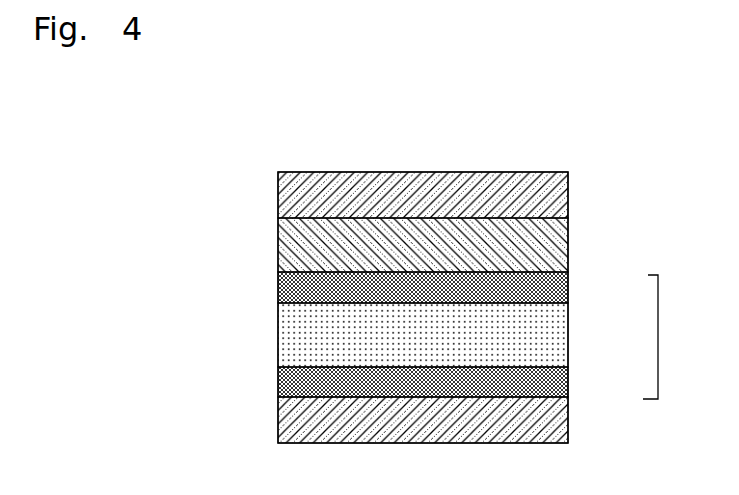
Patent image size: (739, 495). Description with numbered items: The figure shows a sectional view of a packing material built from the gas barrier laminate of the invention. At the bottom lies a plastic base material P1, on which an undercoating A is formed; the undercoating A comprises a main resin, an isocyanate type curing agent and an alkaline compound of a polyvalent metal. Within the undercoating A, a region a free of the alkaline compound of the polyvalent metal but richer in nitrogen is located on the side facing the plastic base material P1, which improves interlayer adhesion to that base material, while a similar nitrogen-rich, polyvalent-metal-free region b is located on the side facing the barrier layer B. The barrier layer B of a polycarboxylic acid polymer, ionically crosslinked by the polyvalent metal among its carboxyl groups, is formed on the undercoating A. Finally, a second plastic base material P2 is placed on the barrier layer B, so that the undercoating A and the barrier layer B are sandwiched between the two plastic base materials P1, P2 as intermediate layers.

The plastic base material P2 is at (568, 199).
The barrier layer B is at (568, 245).
The region b is at (568, 287).
The undercoating A is at (485, 337).
The region a is at (568, 380).
The plastic base material P1 is at (568, 424).